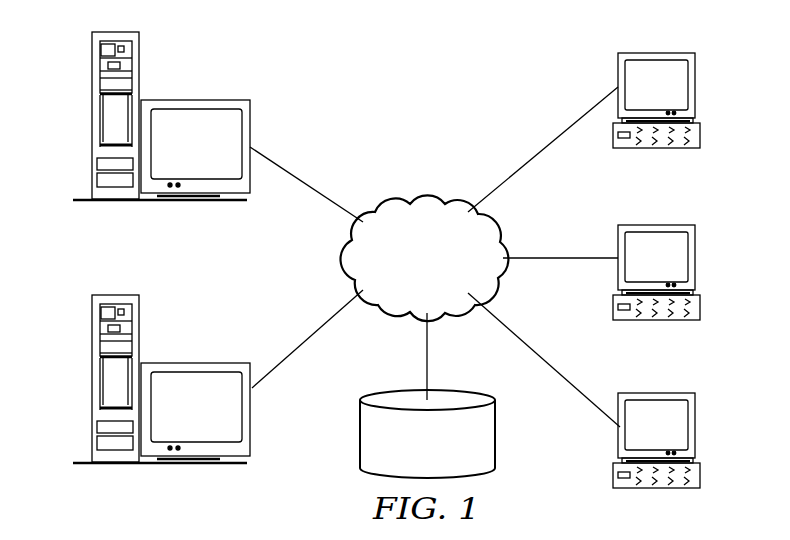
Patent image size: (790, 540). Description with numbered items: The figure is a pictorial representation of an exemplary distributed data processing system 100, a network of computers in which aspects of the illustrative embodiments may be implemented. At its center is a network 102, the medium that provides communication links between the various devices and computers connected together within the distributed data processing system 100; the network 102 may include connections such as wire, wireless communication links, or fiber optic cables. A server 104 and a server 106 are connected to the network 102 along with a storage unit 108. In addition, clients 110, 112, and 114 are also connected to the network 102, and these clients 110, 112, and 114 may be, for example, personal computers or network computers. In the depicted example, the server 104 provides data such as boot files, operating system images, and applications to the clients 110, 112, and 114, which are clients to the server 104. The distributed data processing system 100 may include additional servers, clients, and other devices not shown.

The distributed data processing system 100 is at (483, 94).
The network 102 is at (395, 205).
The server 104 is at (92, 118).
The server 106 is at (92, 381).
The storage unit 108 is at (360, 440).
The client 110 is at (695, 87).
The client 112 is at (695, 258).
The client 114 is at (695, 427).